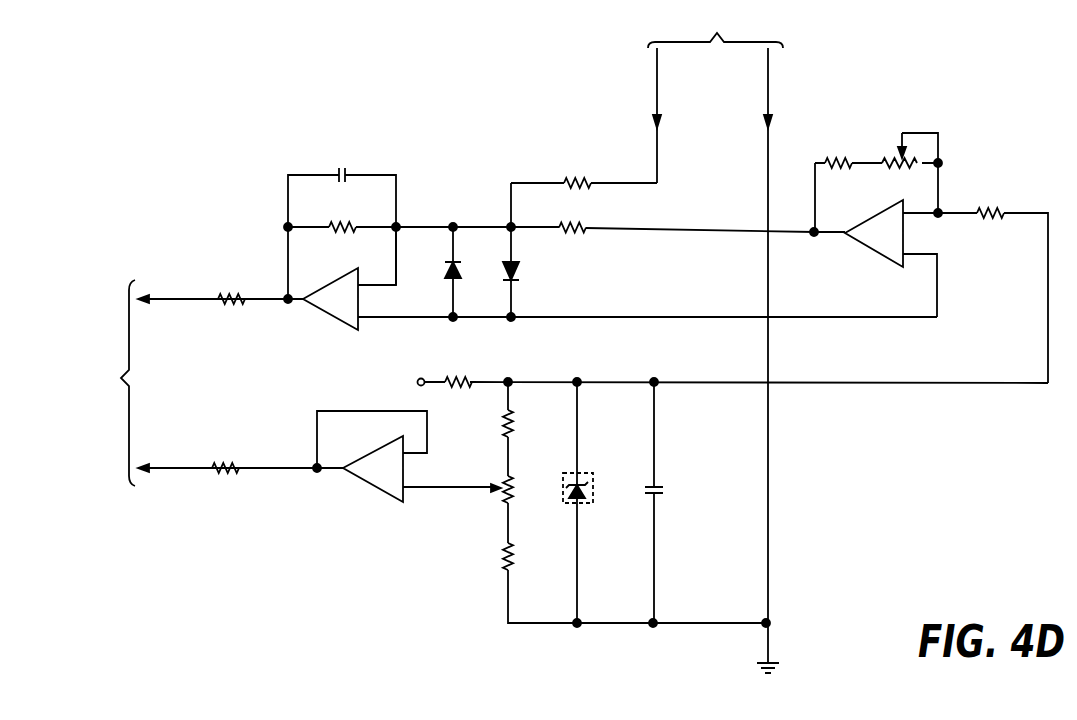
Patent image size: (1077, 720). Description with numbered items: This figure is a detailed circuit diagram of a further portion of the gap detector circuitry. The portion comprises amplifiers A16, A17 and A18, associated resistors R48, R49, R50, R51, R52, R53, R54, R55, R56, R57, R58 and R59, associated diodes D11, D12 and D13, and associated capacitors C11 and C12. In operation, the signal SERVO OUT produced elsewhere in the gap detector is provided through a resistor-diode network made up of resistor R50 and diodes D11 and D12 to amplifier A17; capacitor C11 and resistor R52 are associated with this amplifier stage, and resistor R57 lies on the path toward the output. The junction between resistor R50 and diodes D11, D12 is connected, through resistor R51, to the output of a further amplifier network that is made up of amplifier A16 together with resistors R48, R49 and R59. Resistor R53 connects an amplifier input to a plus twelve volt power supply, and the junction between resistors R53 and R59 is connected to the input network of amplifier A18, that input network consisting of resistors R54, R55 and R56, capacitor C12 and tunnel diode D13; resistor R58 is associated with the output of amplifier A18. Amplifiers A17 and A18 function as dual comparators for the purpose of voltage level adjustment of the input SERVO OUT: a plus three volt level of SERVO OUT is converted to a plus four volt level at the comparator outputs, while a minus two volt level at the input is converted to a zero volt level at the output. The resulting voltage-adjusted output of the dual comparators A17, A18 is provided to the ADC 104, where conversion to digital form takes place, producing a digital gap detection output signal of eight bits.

The ADC 104 is at (101, 383).
The amplifier A16 is at (870, 244).
The amplifier A17 is at (326, 308).
The amplifier A18 is at (370, 477).
The resistor R48 is at (912, 162).
The resistor R49 is at (848, 153).
The resistor R50 is at (584, 173).
The resistor R51 is at (605, 218).
The resistor R52 is at (342, 217).
The resistor R53 is at (725, 374).
The resistor R54 is at (523, 429).
The resistor R55 is at (473, 509).
The resistor R56 is at (636, 585).
The resistor R57 is at (231, 288).
The resistor R58 is at (225, 459).
The resistor R59 is at (1012, 287).
The capacitor C11 is at (342, 167).
The capacitor C12 is at (669, 502).
The diode D11 is at (438, 274).
The diode D12 is at (525, 252).
The tunnel diode D13 is at (593, 502).